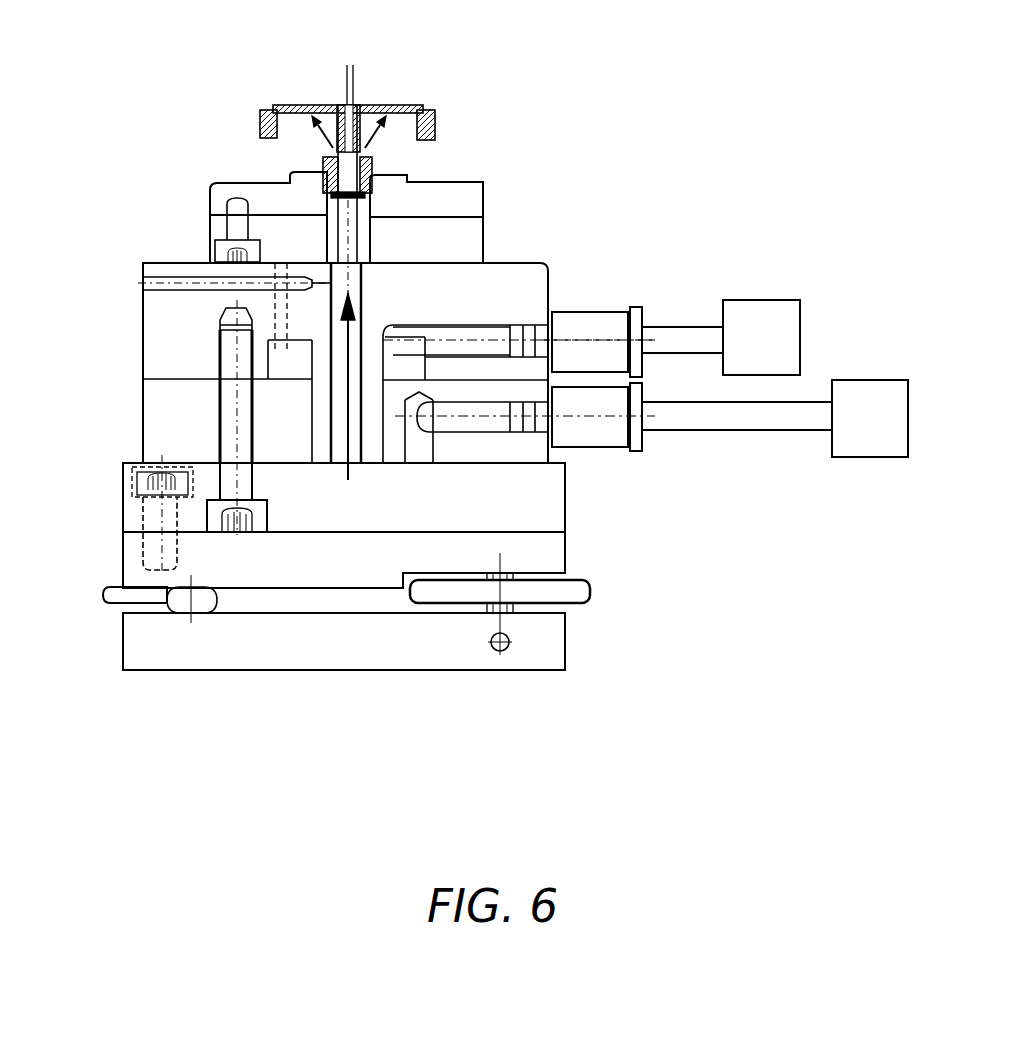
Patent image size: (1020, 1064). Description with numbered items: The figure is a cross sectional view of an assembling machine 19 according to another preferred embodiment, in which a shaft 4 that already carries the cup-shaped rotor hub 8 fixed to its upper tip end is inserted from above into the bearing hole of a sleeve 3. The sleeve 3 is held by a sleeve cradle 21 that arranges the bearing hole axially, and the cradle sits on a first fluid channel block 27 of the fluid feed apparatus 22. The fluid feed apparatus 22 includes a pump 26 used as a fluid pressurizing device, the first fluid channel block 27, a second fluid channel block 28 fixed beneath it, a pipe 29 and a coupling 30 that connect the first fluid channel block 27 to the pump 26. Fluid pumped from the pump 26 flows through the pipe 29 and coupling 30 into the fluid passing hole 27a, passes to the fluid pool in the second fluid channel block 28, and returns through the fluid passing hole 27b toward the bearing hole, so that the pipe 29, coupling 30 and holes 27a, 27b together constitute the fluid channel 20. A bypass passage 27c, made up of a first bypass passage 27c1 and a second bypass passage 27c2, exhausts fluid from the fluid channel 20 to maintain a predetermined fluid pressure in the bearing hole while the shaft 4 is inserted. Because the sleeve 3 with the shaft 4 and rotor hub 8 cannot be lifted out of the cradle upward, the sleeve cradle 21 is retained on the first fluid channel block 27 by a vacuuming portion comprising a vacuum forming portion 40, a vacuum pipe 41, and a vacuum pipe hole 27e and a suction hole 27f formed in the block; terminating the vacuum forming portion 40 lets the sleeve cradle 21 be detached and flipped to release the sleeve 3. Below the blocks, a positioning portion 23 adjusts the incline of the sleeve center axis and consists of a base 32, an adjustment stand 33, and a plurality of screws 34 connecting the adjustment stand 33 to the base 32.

The assembling machine 19 is at (680, 70).
The shaft 4 is at (353, 100).
The rotor hub 8 is at (440, 110).
The sleeve 3 is at (372, 166).
The sleeve cradle 21 is at (483, 200).
The first fluid channel block 27 is at (143, 395).
The fluid passing hole 27a is at (498, 432).
The fluid passing hole 27b is at (362, 466).
The bypass passage 27c is at (126, 108).
The first bypass passage 27c1 is at (190, 275).
The second bypass passage 27c2 is at (333, 265).
The vacuum pipe hole 27e is at (465, 318).
The suction hole 27f is at (292, 293).
The second fluid channel block 28 is at (123, 475).
The adjustment stand 33 is at (123, 548).
The positioning portion 23 is at (62, 592).
The screws 34 is at (112, 600).
The base 32 is at (196, 672).
The fluid feed apparatus 22 is at (718, 244).
The vacuum pipe 41 is at (680, 326).
The vacuum forming portion 40 is at (778, 300).
The coupling 30 is at (642, 440).
The pipe 29 is at (787, 433).
The pump 26 is at (880, 380).
The fluid channel 20 is at (605, 537).